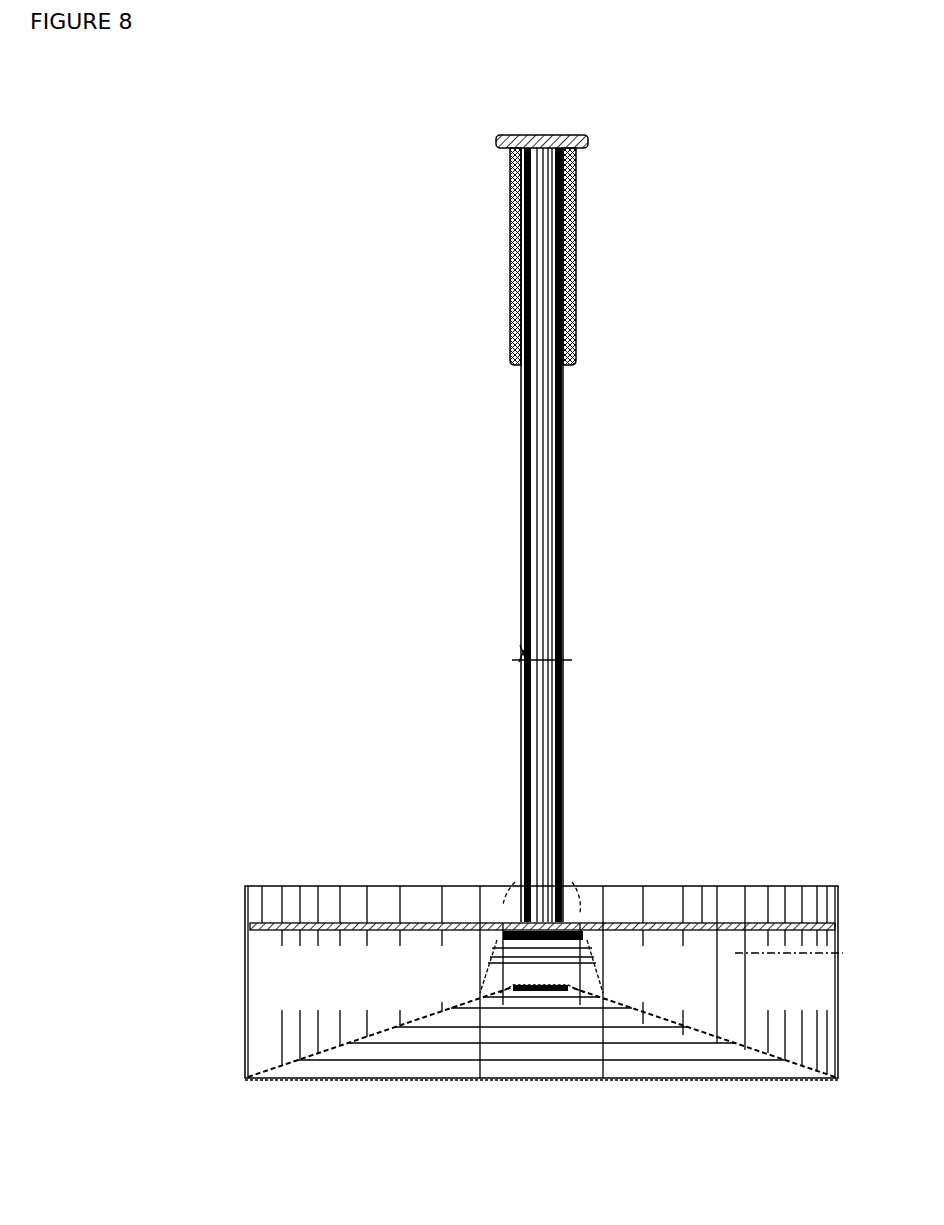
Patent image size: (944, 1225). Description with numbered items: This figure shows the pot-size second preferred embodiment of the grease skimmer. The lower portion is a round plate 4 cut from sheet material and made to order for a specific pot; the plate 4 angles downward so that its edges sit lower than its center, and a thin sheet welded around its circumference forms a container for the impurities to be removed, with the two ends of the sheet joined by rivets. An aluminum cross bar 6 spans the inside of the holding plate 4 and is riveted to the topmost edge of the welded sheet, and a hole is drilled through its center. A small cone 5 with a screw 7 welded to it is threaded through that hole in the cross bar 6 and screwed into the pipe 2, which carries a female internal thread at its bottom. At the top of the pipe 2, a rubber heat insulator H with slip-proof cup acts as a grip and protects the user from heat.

The rubber heat insulator H is at (508, 258).
The pipe 2 is at (565, 689).
The plate 4 is at (243, 985).
The small cone 5 is at (600, 962).
The cross bar 6 is at (733, 918).
The screw 7 is at (520, 960).